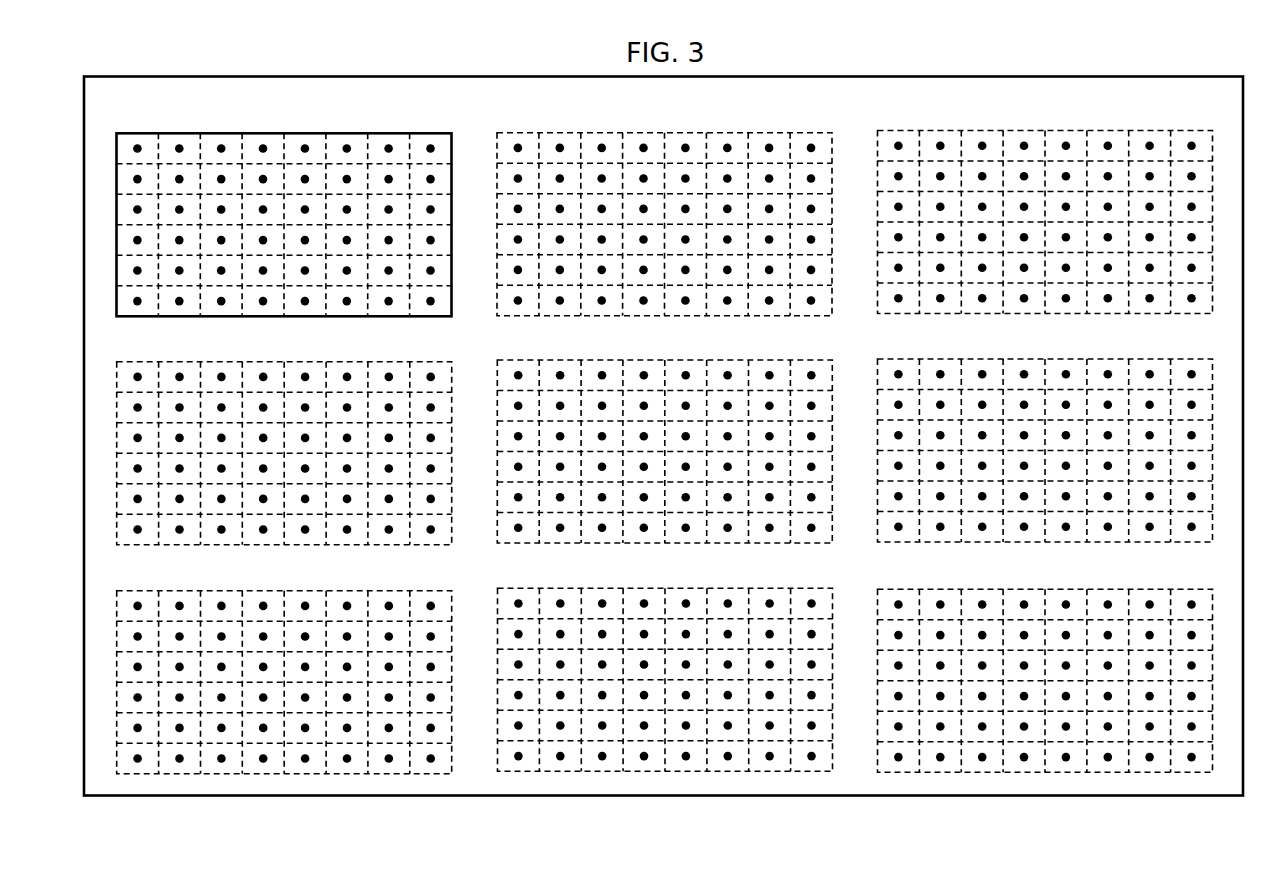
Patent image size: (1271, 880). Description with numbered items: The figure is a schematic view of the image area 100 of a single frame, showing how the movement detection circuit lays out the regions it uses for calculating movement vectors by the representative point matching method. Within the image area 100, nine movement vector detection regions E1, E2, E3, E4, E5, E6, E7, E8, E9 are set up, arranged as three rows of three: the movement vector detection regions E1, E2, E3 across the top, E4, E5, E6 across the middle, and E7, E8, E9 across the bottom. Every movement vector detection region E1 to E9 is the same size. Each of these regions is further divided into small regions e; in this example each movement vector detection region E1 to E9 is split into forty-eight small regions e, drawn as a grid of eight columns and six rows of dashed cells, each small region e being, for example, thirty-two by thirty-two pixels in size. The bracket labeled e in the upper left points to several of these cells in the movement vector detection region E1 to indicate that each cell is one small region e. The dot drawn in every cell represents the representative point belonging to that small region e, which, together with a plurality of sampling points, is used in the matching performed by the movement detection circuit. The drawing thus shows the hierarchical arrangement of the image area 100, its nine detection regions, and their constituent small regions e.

The image area 100 is at (1028, 76).
The small region e is at (222, 133).
The movement vector detection region E1 is at (388, 133).
The movement vector detection region E2 is at (773, 133).
The movement vector detection region E3 is at (1163, 130).
The movement vector detection region E4 is at (388, 362).
The movement vector detection region E5 is at (773, 360).
The movement vector detection region E6 is at (1165, 359).
The movement vector detection region E7 is at (388, 591).
The movement vector detection region E8 is at (773, 588).
The movement vector detection region E9 is at (1165, 589).